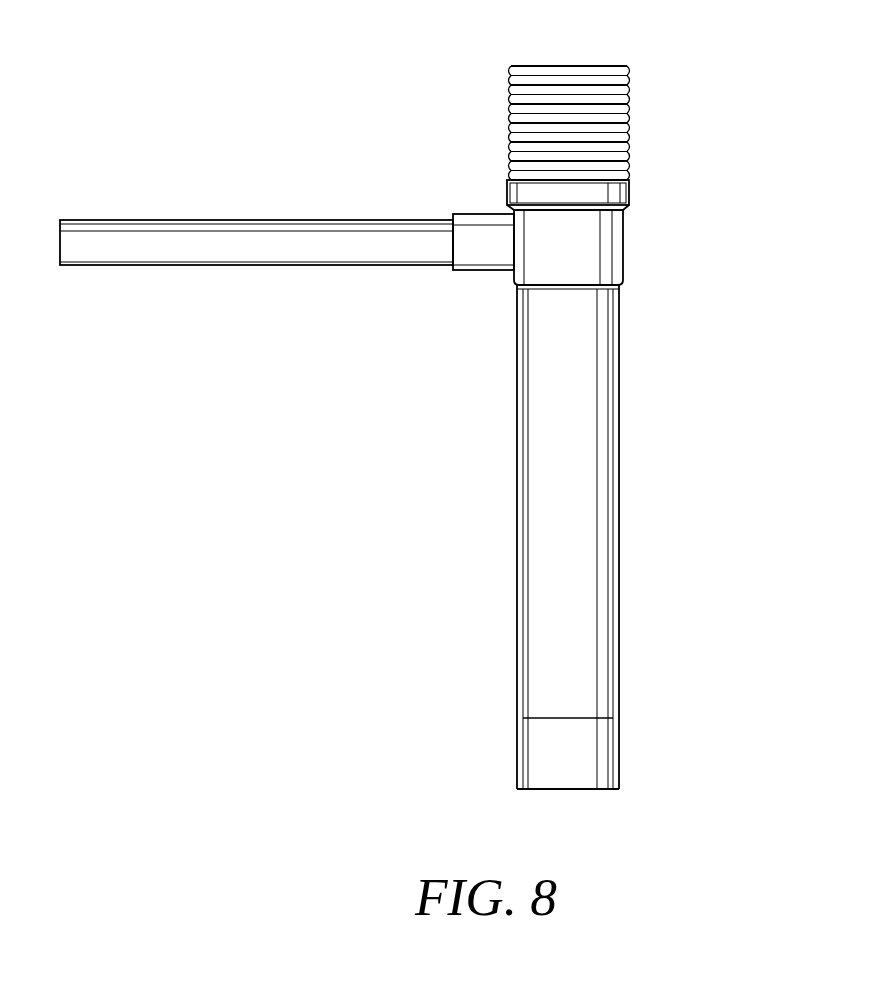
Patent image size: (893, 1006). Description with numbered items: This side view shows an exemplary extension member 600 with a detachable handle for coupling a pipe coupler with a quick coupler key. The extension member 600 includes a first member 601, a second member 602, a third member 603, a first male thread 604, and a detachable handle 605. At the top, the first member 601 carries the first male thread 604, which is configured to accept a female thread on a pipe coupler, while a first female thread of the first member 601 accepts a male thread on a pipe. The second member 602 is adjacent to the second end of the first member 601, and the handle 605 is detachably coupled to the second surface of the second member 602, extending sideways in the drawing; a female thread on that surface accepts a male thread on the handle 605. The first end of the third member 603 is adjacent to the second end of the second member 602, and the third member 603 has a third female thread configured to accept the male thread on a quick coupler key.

The extension member 600 is at (338, 72).
The first member 601 is at (647, 138).
The second member 602 is at (648, 405).
The third member 603 is at (648, 750).
The first male thread 604 is at (630, 72).
The detachable handle 605 is at (240, 219).